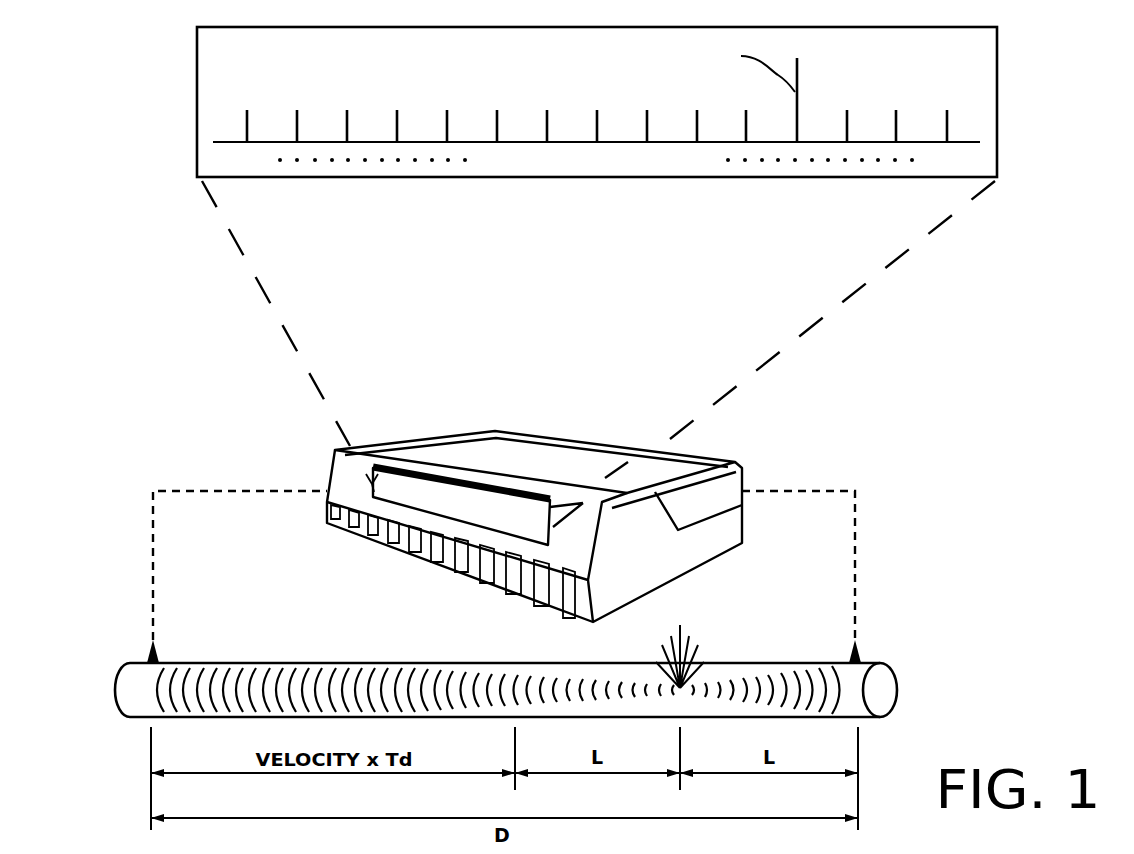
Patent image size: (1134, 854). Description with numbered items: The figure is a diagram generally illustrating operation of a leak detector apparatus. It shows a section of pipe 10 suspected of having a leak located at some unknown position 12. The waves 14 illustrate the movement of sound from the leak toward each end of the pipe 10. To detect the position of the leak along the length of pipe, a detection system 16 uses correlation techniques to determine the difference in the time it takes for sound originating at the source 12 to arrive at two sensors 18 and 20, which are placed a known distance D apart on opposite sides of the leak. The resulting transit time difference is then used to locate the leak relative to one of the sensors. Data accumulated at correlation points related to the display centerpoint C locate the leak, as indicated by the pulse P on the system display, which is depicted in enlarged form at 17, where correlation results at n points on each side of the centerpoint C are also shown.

The pipe 10 is at (128, 698).
The leak 12 is at (700, 657).
The waves 14 is at (412, 690).
The detection system 16 is at (720, 465).
The system display 17 is at (997, 105).
The sensor 18 is at (158, 656).
The sensor 20 is at (850, 656).